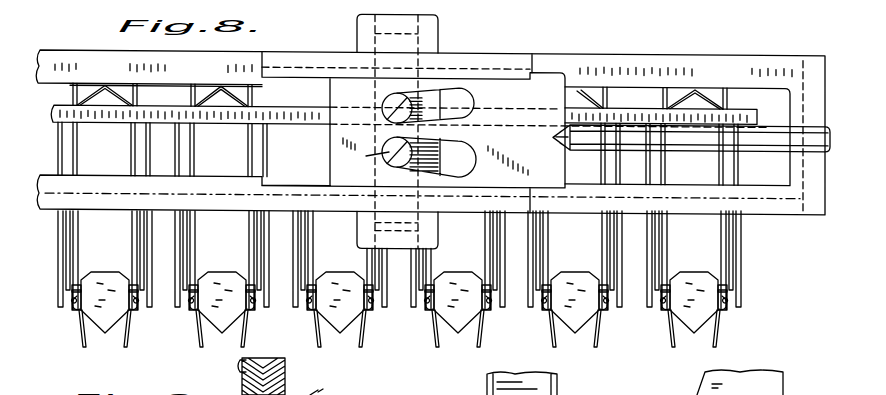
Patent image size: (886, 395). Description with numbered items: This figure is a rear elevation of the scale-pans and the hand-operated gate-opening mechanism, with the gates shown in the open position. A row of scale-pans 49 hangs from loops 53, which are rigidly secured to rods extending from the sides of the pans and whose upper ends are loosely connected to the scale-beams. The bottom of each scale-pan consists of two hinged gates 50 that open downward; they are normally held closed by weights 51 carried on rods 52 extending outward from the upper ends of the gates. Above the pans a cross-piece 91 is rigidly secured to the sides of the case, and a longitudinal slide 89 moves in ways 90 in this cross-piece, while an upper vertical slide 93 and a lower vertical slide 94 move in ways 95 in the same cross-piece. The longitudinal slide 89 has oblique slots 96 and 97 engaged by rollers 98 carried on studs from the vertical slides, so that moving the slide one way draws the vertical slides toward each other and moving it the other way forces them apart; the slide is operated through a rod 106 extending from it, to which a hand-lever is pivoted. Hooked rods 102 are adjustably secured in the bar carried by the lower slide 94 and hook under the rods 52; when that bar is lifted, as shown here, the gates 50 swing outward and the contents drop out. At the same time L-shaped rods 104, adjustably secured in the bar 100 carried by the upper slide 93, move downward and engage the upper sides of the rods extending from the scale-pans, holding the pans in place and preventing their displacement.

In FIG. 8, the scale-pans 49 is at (399, 302).
In FIG. 8, the hinged gates 50 is at (110, 350).
In FIG. 8, the weights 51 is at (143, 312).
In FIG. 8, the rods 52 is at (138, 308).
In FIG. 8, the loops 53 is at (178, 157).
In FIG. 8, the longitudinal slide 89 is at (509, 160).
In FIG. 8, the ways 90 is at (465, 58).
In FIG. 9, the ways 90 is at (322, 394).
In FIG. 8, the cross-piece 91 is at (430, 132).
In FIG. 8, the upper vertical slide 93 is at (405, 49).
In FIG. 8, the lower vertical slide 94 is at (381, 230).
In FIG. 9, the ways 95 is at (256, 360).
In FIG. 8, the oblique slot 96 is at (428, 106).
In FIG. 8, the oblique slot 97 is at (429, 157).
In FIG. 8, the rollers 98 is at (393, 120).
In FIG. 8, the bar 100 is at (168, 112).
In FIG. 8, the hooked rods 102 is at (316, 0).
In FIG. 8, the L-shaped rods 104 is at (305, 97).
In FIG. 8, the rod 106 is at (691, 138).